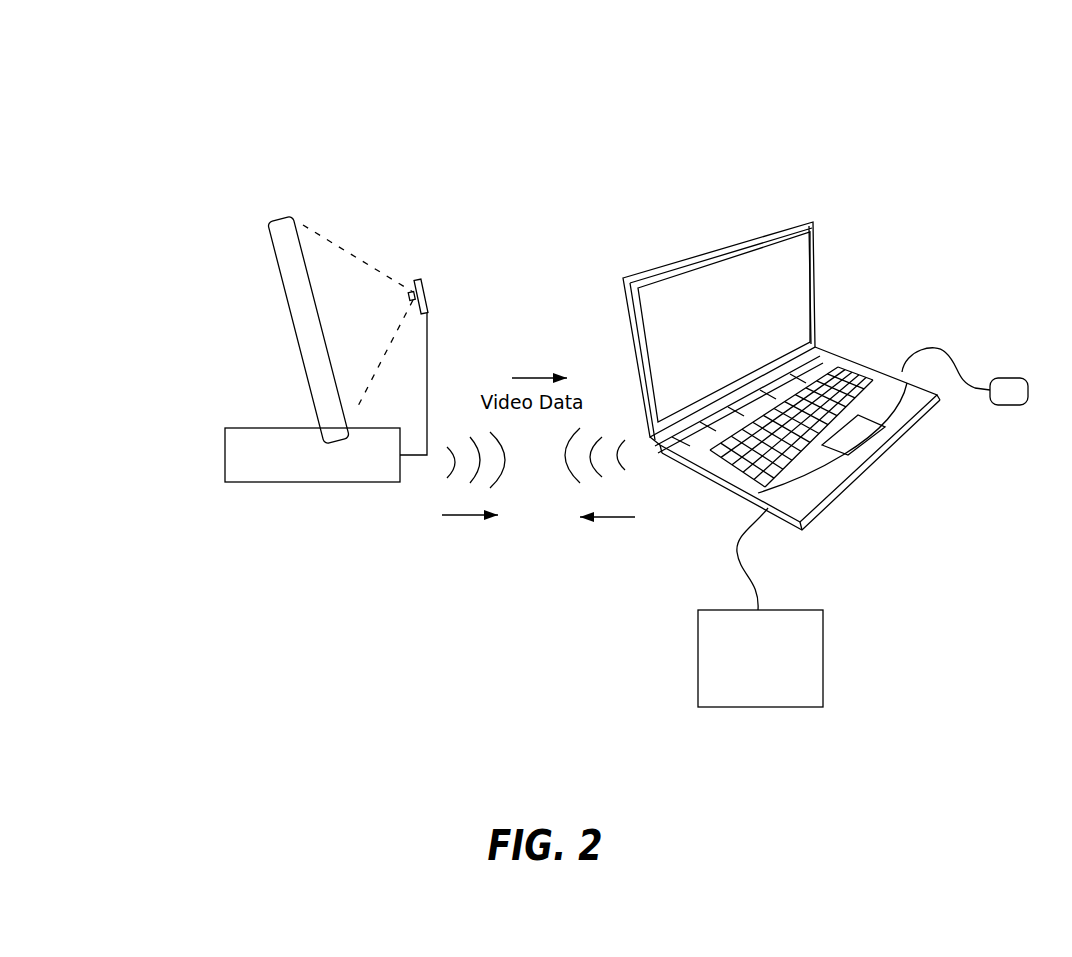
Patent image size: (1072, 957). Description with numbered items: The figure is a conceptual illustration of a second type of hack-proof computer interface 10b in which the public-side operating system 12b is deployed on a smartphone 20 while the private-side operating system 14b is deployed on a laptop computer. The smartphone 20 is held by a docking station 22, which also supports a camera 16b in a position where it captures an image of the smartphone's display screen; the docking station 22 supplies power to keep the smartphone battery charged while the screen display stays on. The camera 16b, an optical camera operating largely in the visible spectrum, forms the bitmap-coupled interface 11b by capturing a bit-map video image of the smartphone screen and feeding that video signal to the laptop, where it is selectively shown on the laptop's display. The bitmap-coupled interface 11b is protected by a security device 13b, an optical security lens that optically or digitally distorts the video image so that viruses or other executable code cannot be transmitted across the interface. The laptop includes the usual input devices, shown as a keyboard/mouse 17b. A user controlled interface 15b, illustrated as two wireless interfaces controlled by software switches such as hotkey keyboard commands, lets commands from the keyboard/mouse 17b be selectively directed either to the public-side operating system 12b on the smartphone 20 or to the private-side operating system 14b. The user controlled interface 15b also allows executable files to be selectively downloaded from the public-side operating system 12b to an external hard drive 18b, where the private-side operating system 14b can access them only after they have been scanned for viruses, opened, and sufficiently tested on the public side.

The hack-proof computer interface 10b is at (900, 167).
The bitmap-coupled interface 11b is at (300, 190).
The public-side operating system 12b is at (235, 202).
The security device 13b is at (413, 300).
The private-side operating system 14b is at (862, 533).
The user controlled interface 15b is at (717, 587).
The camera 16b is at (427, 295).
The keyboard/mouse 17b is at (997, 422).
The external hard drive 18b is at (760, 607).
The smartphone 20 is at (288, 308).
The docking station 22 is at (255, 428).